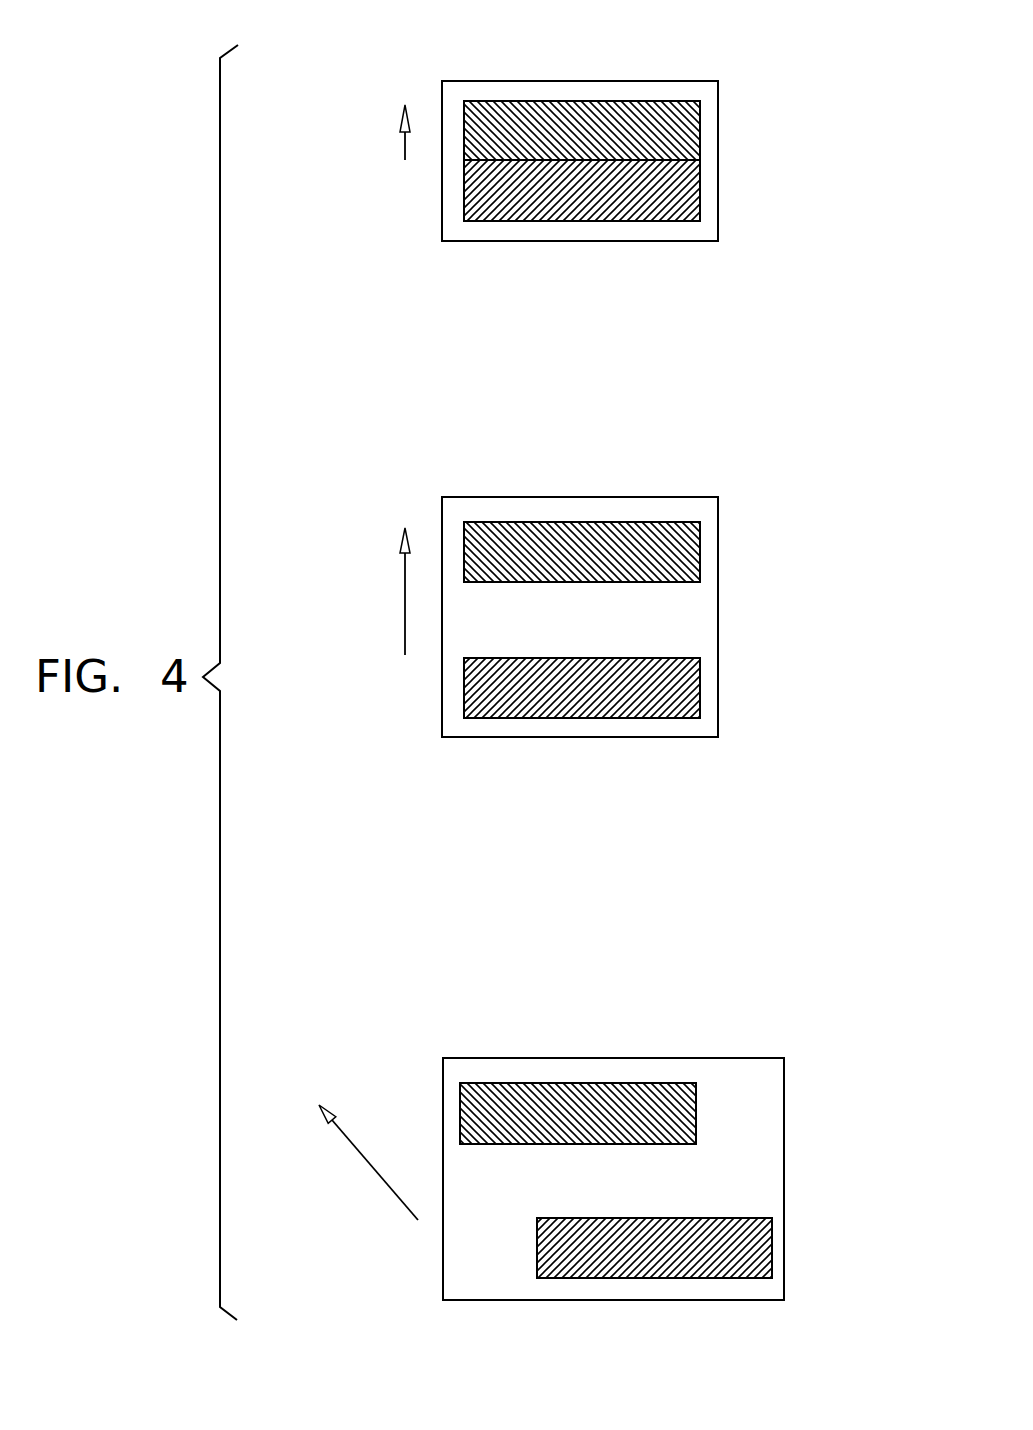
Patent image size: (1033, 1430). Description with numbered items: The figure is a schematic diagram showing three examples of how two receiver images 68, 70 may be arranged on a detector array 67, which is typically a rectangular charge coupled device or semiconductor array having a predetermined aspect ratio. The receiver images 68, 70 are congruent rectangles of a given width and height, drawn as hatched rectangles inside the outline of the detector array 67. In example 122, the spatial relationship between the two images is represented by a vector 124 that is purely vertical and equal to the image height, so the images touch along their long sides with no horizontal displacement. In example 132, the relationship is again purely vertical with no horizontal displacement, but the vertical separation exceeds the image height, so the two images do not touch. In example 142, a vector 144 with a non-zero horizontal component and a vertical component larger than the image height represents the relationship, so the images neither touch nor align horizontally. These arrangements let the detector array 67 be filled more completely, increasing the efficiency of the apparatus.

The detector array 67 is at (718, 143).
The receiver image 68 is at (600, 101).
The receiver image 70 is at (613, 221).
The example 122 is at (763, 57).
The vector 124 is at (405, 143).
The example 132 is at (763, 512).
The example 142 is at (828, 1074).
The vector 144 is at (360, 1153).